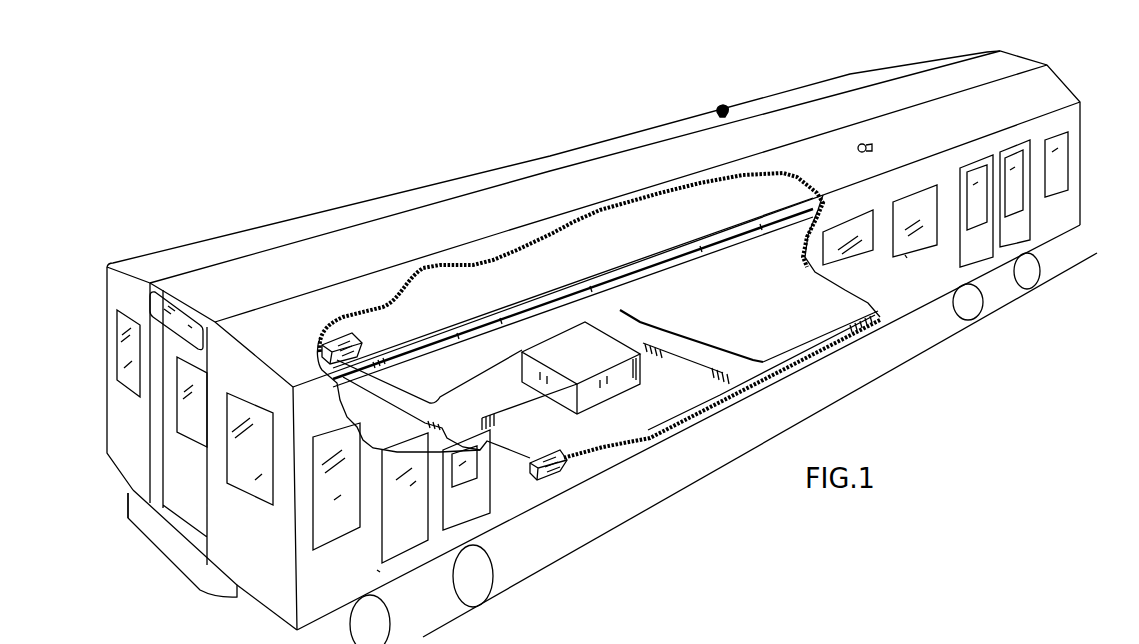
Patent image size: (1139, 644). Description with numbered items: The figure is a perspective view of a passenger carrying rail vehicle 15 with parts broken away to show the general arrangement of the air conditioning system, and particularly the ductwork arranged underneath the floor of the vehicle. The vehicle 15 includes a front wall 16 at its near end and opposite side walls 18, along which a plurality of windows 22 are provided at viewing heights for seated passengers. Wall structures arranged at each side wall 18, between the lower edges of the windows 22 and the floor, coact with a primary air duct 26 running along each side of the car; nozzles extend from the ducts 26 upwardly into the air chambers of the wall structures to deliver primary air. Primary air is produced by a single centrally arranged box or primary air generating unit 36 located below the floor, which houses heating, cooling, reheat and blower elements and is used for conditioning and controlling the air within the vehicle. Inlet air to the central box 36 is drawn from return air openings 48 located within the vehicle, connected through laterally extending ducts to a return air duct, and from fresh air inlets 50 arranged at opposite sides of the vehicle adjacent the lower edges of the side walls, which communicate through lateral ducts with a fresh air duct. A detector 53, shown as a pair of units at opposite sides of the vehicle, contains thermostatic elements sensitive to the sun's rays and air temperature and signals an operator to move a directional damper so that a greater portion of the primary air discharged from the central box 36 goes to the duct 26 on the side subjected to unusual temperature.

The rail vehicle 15 is at (1073, 89).
The front wall 16 is at (263, 587).
The side wall 18 is at (377, 570).
The windows 22 is at (905, 255).
The primary air duct 26 is at (680, 260).
The primary air generating unit 36 is at (623, 378).
The return air openings 48 is at (358, 347).
The fresh air inlets 50 is at (557, 473).
The detector 53 is at (721, 108).